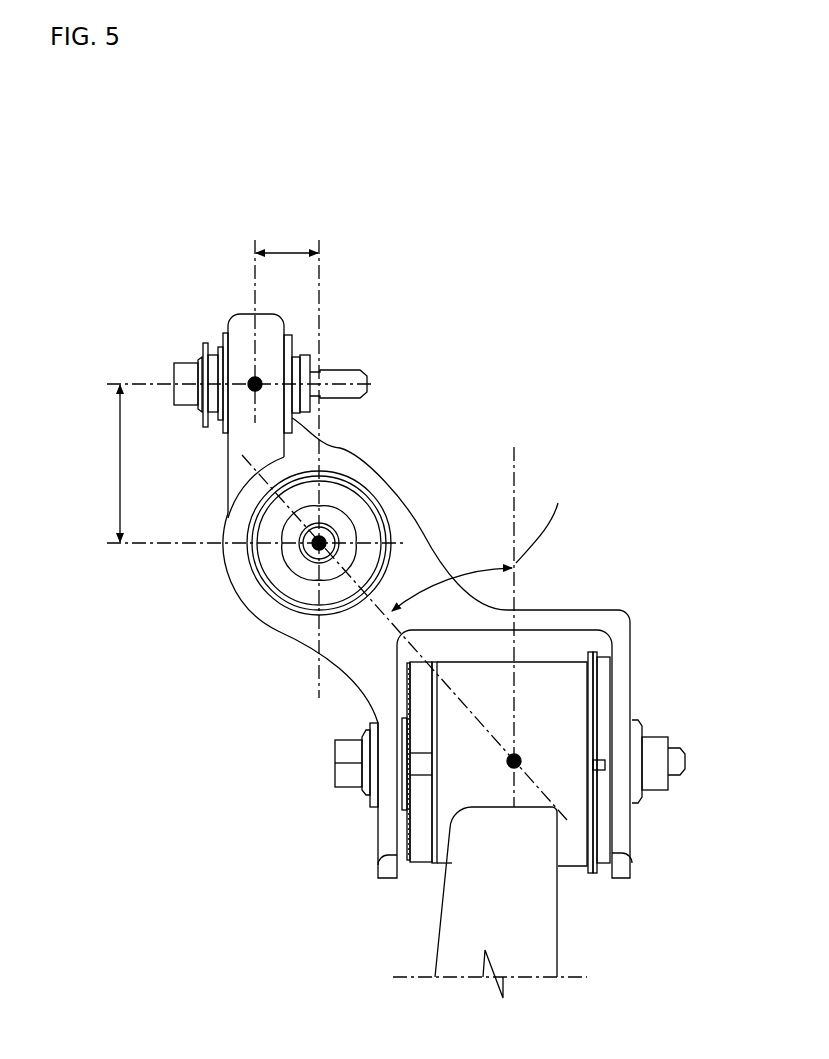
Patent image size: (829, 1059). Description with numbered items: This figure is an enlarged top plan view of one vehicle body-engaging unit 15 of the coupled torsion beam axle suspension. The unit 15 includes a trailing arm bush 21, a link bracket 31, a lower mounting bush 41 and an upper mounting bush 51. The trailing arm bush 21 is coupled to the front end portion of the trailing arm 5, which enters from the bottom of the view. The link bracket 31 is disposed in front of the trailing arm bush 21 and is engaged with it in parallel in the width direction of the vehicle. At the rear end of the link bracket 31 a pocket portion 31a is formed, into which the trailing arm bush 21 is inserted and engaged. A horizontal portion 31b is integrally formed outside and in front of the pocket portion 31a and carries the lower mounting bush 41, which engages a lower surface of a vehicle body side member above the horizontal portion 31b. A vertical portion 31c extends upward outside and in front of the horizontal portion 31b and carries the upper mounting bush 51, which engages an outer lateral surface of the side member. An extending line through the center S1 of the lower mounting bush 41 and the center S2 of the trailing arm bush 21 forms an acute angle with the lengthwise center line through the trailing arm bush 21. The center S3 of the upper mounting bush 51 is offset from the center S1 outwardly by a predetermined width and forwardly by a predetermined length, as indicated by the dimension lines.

The vehicle body-engaging unit 15 is at (426, 400).
The link bracket 31 is at (278, 634).
The pocket portion 31a is at (623, 640).
The horizontal portion 31b is at (238, 573).
The vertical portion 31c is at (275, 343).
The lower mounting bush 41 is at (360, 508).
The upper mounting bush 51 is at (223, 347).
The trailing arm bush 21 is at (568, 782).
The trailing arm 5 is at (537, 923).
The center of the lower mounting bush S1 is at (319, 543).
The center of the trailing arm bush S2 is at (514, 761).
The center of the upper mounting bush S3 is at (255, 384).